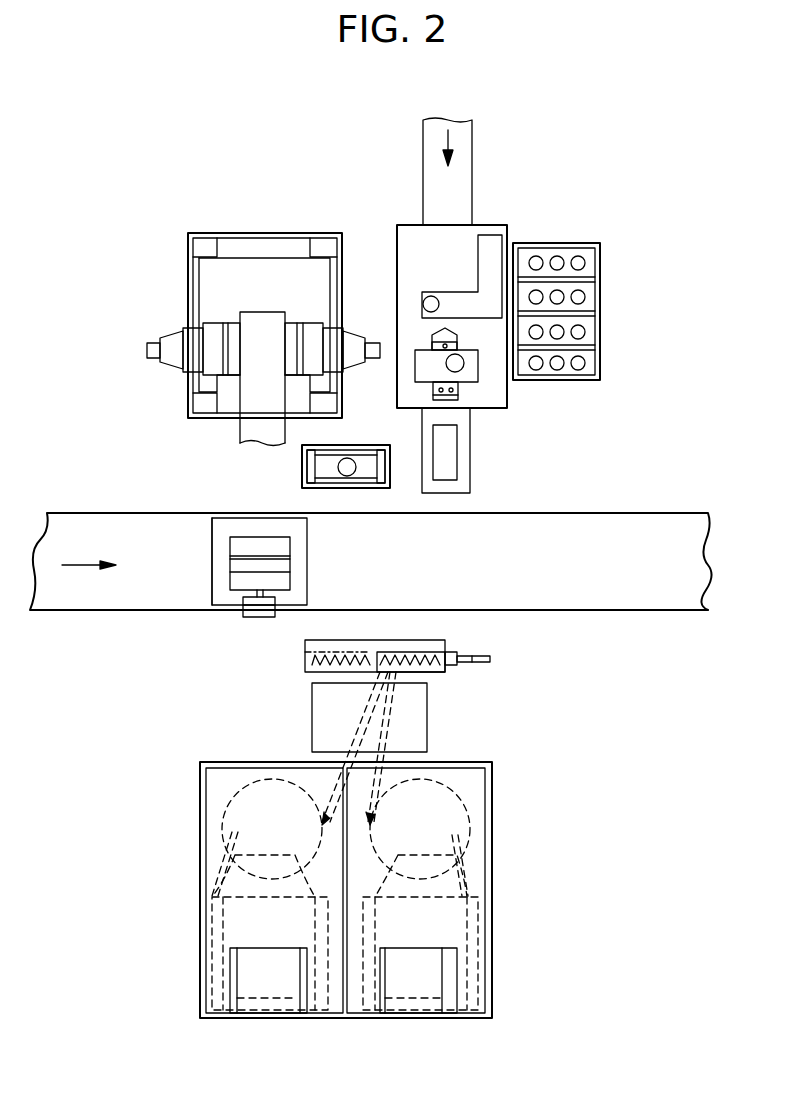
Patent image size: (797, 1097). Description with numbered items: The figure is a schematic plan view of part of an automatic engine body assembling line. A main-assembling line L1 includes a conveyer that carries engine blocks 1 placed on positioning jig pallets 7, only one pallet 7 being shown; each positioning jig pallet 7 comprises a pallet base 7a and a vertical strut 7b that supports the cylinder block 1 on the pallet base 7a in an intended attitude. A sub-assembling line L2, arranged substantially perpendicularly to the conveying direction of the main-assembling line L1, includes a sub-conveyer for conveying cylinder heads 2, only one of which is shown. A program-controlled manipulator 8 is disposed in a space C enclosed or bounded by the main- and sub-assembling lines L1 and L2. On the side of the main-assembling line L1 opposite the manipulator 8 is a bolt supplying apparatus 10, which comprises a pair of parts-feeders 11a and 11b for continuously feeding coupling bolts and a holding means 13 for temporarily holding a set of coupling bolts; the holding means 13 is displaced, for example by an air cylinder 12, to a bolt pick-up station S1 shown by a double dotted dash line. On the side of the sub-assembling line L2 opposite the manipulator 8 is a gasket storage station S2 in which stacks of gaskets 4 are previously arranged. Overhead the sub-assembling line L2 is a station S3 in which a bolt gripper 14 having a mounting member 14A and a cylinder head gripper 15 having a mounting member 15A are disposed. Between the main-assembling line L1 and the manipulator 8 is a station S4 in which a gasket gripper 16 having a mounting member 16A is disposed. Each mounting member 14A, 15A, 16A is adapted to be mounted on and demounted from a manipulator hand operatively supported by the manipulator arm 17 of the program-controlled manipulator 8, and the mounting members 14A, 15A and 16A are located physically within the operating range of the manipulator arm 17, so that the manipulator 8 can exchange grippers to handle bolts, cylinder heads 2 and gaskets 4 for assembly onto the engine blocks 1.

The engine block 1 is at (290, 540).
The cylinder head 2 is at (450, 458).
The gaskets 4 is at (583, 263).
The positioning jig pallet 7 is at (307, 587).
The pallet base 7a is at (212, 570).
The vertical strut 7b is at (262, 617).
The program-controlled manipulator 8 is at (240, 314).
The bolt supplying apparatus 10 is at (450, 752).
The parts-feeder 11a is at (470, 812).
The parts-feeder 11b is at (222, 822).
The air cylinder 12 is at (470, 654).
The holding means 13 is at (415, 650).
The bolt gripper 14 is at (487, 263).
The mounting member 14A is at (424, 303).
The cylinder head gripper 15 is at (473, 378).
The mounting member 15A is at (452, 366).
The gasket gripper 16 is at (372, 472).
The mounting member 16A is at (352, 459).
The manipulator arm 17 is at (248, 420).
The space C is at (272, 228).
The main-assembling line L1 is at (672, 612).
The sub-assembling line L2 is at (472, 150).
The bolt pick-up station S1 is at (303, 645).
The gasket storage station S2 is at (588, 244).
The station S3 is at (500, 218).
The station S4 is at (302, 470).